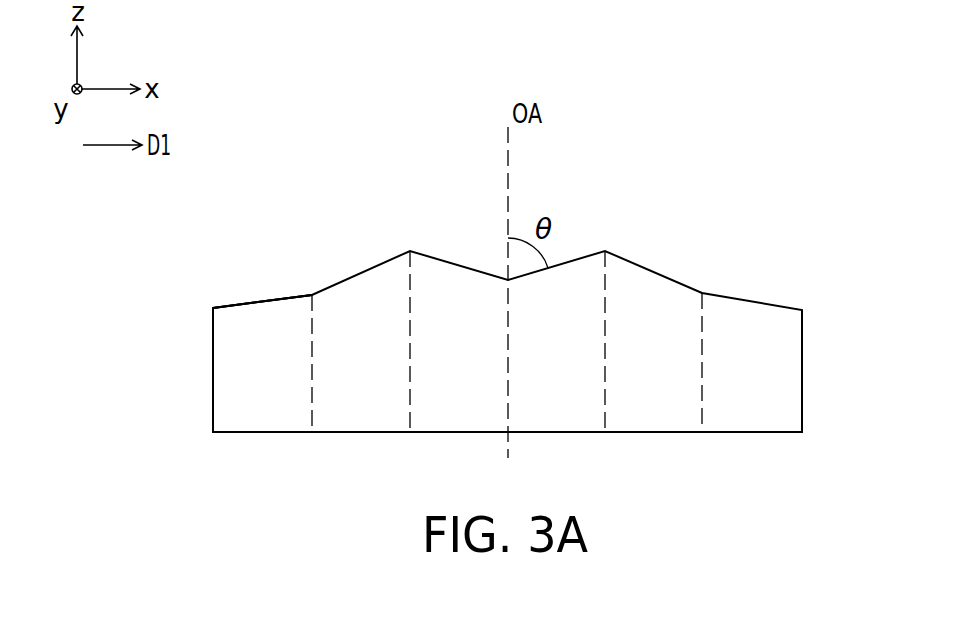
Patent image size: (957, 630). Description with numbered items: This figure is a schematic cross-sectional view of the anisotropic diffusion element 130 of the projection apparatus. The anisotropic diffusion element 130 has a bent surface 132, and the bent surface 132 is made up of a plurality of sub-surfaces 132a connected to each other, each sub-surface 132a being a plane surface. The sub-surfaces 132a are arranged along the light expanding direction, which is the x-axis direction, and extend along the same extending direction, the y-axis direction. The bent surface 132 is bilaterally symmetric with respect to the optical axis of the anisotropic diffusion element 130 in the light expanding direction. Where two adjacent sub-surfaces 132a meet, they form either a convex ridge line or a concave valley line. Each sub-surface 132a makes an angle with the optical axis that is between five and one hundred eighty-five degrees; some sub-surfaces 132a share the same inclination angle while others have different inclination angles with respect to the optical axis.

The anisotropic diffusion element 130 is at (798, 183).
The sub-surface 132a is at (279, 299).
The bent surface 132 is at (262, 301).